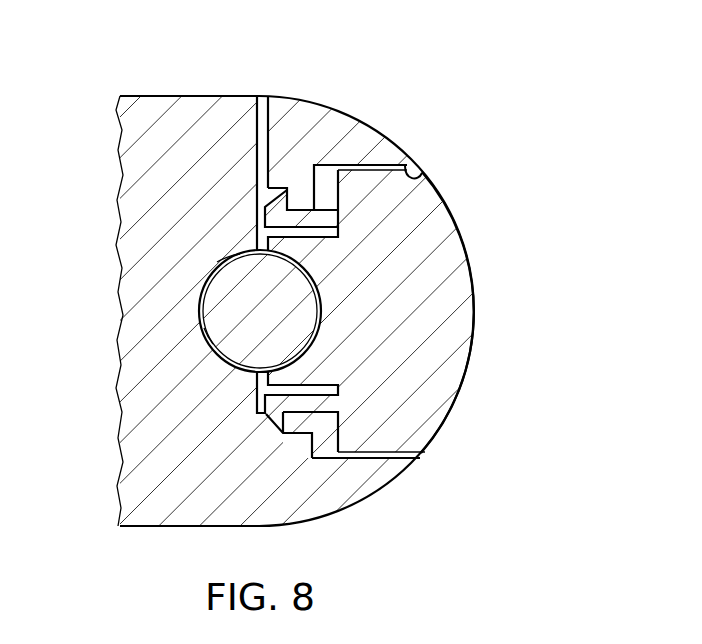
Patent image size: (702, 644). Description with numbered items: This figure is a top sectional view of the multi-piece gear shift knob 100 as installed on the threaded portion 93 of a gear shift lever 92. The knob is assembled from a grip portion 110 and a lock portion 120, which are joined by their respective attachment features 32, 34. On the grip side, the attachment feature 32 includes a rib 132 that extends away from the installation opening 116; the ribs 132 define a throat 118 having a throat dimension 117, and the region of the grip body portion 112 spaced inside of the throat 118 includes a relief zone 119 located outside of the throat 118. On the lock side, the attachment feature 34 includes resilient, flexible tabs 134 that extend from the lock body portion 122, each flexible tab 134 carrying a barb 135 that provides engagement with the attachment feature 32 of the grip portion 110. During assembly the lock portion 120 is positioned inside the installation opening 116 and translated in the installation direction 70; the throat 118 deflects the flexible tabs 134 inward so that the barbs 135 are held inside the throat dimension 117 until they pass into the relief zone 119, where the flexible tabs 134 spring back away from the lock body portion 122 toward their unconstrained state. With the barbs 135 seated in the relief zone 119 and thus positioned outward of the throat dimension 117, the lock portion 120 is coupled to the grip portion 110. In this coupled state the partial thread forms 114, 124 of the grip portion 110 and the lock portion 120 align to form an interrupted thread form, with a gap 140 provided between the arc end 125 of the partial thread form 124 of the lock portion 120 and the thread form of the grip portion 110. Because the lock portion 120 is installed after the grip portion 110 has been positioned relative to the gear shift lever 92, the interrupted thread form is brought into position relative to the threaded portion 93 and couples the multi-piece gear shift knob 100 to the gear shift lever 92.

The multi-piece gear shift knob 100 is at (351, 273).
The grip portion 110 is at (351, 273).
The grip body portion 112 is at (375, 503).
The partial thread form 114 is at (210, 292).
The installation opening 116 is at (420, 178).
The throat dimension 117 is at (30, 207).
The throat 118 is at (305, 203).
The relief zone 119 is at (263, 186).
The lock portion 120 is at (493, 312).
The lock body portion 122 is at (473, 332).
The partial thread form 124 is at (330, 313).
The arc end 125 is at (294, 254).
The rib 132 is at (282, 435).
The flexible tab 134 is at (260, 427).
The barb 135 is at (276, 428).
The gap 140 is at (268, 80).
The attachment feature 32 is at (320, 178).
The attachment feature 34 is at (256, 449).
The installation direction 70 is at (207, 58).
The gear shift lever 92 is at (205, 264).
The threaded portion 93 is at (224, 341).